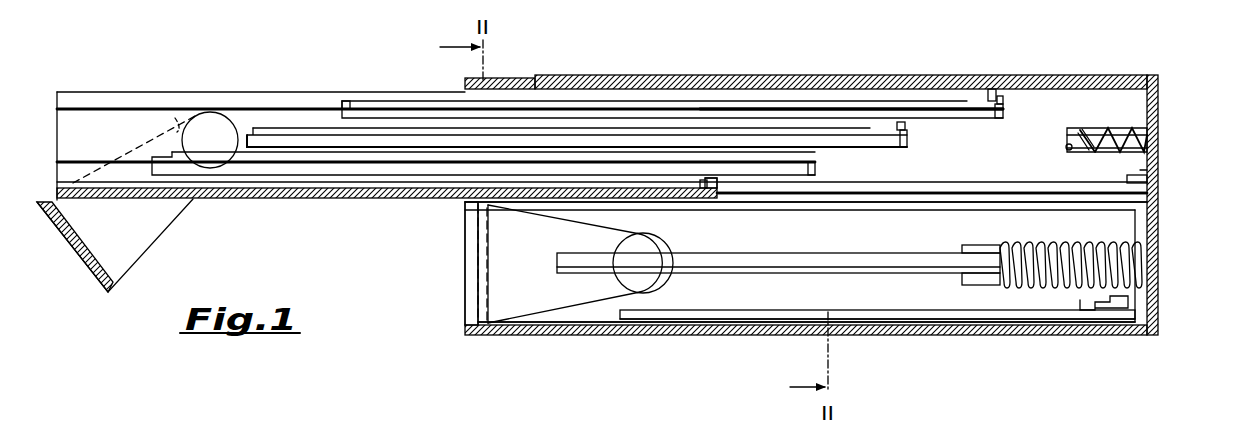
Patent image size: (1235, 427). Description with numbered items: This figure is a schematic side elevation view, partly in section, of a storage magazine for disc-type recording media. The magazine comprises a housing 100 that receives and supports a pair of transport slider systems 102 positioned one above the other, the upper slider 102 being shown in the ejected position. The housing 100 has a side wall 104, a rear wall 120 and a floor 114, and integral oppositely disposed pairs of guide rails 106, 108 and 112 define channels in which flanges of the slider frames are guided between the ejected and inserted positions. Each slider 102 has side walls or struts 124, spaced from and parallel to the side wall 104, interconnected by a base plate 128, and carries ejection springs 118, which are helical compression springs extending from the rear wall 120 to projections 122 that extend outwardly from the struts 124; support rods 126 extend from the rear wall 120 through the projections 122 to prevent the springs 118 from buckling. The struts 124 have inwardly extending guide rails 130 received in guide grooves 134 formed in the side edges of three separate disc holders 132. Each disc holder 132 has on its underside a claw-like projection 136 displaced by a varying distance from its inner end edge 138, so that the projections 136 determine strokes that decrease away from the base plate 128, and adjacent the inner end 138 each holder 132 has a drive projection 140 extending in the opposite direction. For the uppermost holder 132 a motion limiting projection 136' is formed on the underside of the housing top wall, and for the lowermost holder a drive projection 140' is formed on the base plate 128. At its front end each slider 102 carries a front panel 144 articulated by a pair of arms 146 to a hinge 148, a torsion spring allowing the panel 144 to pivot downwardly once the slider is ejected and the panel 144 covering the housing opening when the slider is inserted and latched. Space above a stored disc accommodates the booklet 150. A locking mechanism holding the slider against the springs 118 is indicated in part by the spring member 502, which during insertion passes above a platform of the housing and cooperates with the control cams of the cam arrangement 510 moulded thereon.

The housing 100 is at (1162, 229).
The transport slider system 102 is at (460, 252).
The side wall 104 is at (1094, 106).
The guide rail 106 is at (928, 190).
The guide rail 108 is at (973, 200).
The guide rail 112 is at (675, 319).
The floor 114 is at (480, 322).
The ejection spring 118 is at (1088, 152).
The rear wall 120 is at (1150, 178).
The projection 122 is at (962, 278).
The strut 124 is at (748, 295).
The support rod 126 is at (1125, 128).
The base plate 128 is at (292, 200).
The guide rail 130 is at (73, 160).
The disc holder 132 is at (767, 153).
The guide groove 134 is at (325, 167).
The projection 136 is at (783, 179).
The motion limiting projection 136' is at (1002, 67).
The inner end edge 138 is at (1003, 114).
The drive projection 140 is at (880, 164).
The drive projection 140' is at (737, 207).
The front panel 144 is at (70, 255).
The arm 146 is at (155, 225).
The hinge 148 is at (177, 130).
The booklet 150 is at (213, 150).
The spring member 502 is at (1115, 310).
The cam arrangement 510 is at (1142, 176).